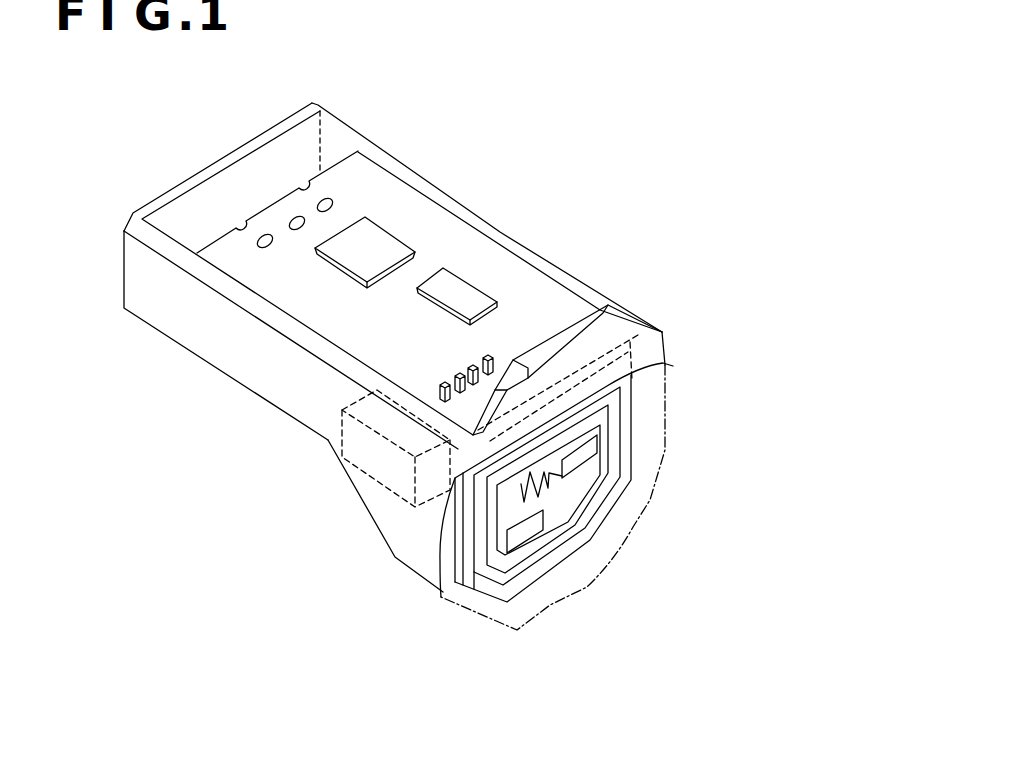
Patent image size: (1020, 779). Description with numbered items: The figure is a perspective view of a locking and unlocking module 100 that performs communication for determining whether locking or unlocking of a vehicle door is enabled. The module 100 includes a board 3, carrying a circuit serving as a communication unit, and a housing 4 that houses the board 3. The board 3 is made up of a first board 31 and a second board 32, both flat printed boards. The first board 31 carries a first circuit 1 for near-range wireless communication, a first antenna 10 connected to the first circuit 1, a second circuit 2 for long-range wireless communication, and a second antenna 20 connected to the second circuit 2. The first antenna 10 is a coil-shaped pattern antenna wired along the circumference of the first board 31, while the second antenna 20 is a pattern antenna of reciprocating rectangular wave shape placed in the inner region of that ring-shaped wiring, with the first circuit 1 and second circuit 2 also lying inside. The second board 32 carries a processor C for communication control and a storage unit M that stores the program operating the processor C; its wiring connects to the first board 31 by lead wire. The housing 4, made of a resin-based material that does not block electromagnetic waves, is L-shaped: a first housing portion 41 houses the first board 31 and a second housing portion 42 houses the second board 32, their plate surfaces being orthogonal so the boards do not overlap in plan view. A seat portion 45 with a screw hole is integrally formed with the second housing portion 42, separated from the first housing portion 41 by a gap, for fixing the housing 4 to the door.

The locking and unlocking module 100 is at (621, 114).
The first circuit 1 is at (527, 535).
The first antenna 10 is at (490, 580).
The second circuit 2 is at (590, 454).
The second antenna 20 is at (550, 478).
The board 3 is at (727, 232).
The first board 31 is at (632, 342).
The second board 32 is at (558, 310).
The housing 4 is at (355, 523).
The first housing portion 41 is at (433, 557).
The second housing portion 42 is at (292, 163).
The seat portion 45 is at (323, 437).
The processor C is at (380, 243).
The storage unit M is at (467, 293).